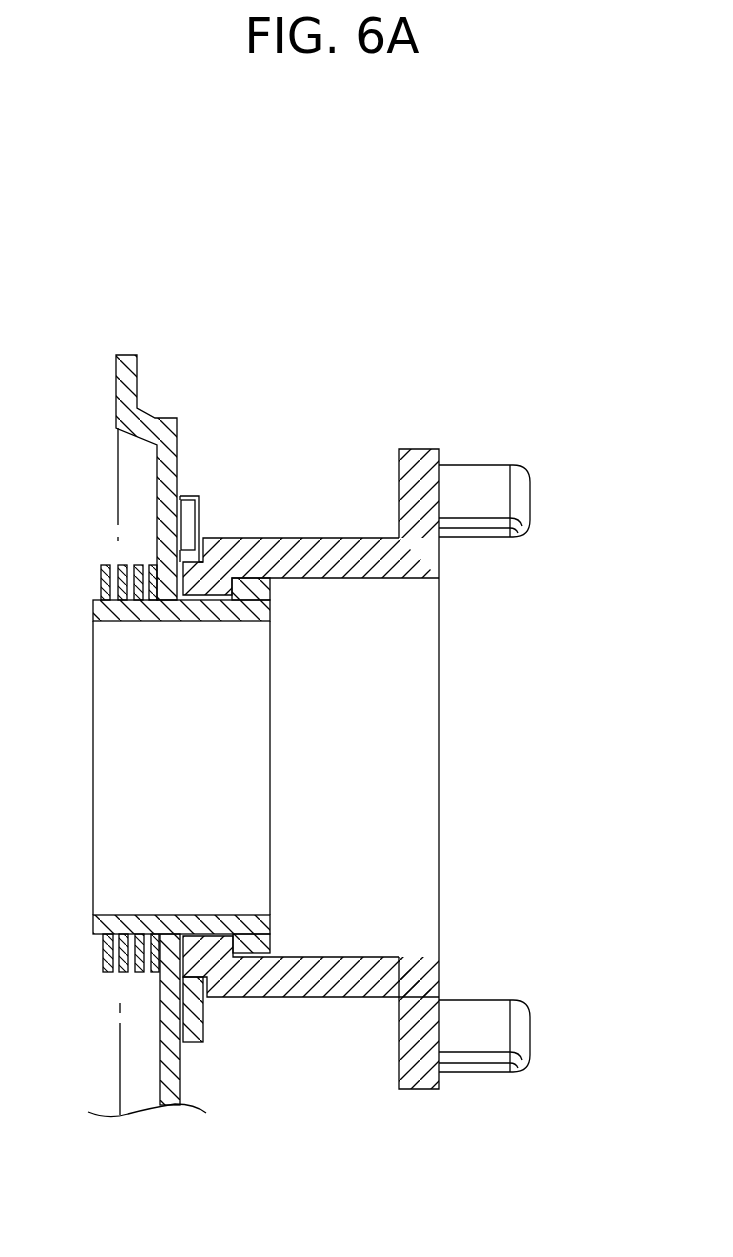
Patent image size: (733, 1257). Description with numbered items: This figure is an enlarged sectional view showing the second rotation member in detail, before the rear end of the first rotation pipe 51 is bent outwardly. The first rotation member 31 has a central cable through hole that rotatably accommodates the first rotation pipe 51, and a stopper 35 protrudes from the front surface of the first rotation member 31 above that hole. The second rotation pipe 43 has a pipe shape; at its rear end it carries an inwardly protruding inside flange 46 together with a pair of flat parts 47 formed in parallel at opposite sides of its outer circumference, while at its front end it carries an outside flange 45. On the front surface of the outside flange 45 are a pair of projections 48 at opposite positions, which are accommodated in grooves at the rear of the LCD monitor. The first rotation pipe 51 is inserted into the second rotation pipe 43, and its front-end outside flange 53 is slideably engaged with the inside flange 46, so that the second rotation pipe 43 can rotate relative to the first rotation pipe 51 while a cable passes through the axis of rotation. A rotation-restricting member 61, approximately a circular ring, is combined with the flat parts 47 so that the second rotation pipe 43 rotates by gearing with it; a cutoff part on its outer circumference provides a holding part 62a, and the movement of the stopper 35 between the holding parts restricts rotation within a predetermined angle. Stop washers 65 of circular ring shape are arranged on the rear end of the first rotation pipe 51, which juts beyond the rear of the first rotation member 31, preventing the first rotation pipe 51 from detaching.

The first rotation member 31 is at (167, 472).
The holding part 62a is at (187, 497).
The stopper 35 is at (190, 518).
The second rotation pipe 43 is at (322, 548).
The outside flange 45 is at (422, 460).
The projections 48 is at (522, 505).
The outside flange 53 is at (270, 601).
The first rotation pipe 51 is at (145, 620).
The inside flange 46 is at (213, 618).
The stop washers 65 is at (137, 972).
The flat parts 47 is at (200, 993).
The rotation-restricting member 61 is at (203, 1035).